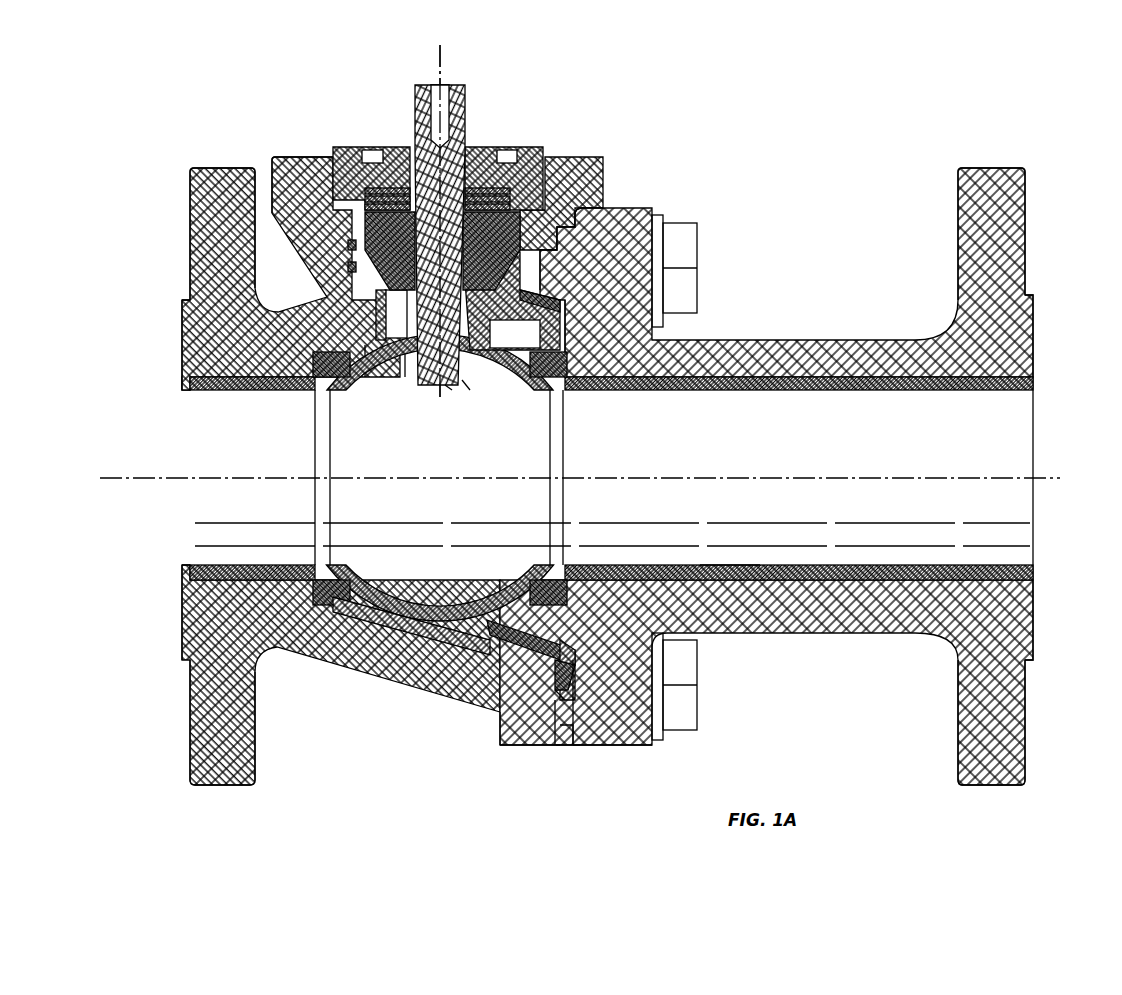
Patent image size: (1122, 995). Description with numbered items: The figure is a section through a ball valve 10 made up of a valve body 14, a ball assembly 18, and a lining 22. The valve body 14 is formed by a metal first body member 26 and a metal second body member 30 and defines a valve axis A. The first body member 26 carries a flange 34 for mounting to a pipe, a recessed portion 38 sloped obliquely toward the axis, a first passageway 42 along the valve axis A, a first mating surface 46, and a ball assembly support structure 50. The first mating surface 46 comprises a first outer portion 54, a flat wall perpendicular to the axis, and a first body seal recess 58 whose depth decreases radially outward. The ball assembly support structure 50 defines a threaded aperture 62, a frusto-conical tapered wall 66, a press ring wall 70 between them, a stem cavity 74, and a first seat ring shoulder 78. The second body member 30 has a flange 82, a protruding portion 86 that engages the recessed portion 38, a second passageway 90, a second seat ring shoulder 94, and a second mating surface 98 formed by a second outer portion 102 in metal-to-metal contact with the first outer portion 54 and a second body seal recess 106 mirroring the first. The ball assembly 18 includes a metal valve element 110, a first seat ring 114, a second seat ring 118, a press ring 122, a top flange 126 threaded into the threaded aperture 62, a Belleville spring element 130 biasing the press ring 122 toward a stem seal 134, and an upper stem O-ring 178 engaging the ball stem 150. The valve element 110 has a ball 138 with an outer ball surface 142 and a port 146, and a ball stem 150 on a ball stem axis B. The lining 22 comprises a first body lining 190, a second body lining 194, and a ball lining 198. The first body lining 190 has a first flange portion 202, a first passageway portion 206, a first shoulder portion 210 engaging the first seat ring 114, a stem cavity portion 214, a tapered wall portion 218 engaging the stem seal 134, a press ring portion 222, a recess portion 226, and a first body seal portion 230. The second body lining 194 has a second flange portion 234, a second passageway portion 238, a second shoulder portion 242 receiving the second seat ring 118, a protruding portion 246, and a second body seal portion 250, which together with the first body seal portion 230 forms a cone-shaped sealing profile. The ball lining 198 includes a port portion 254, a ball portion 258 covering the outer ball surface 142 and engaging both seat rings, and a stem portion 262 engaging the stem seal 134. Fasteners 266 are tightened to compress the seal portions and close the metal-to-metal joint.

The ball valve 10 is at (836, 96).
The valve body 14 is at (880, 180).
The ball assembly 18 is at (478, 100).
The lining 22 is at (376, 442).
The first body member 26 is at (212, 740).
The second body member 30 is at (788, 454).
The flange 34 is at (190, 212).
The recessed portion 38 is at (530, 670).
The first passageway 42 is at (232, 556).
The first mating surface 46 is at (556, 752).
The ball assembly support structure 50 is at (358, 256).
The first outer portion 54 is at (560, 708).
The first body seal recess 58 is at (568, 665).
The threaded aperture 62 is at (346, 146).
The tapered wall 66 is at (366, 278).
The press ring wall 70 is at (322, 183).
The stem cavity 74 is at (370, 295).
The first seat ring shoulder 78 is at (302, 398).
The flange 82 is at (1000, 178).
The protruding portion 86 is at (556, 318).
The second passageway 90 is at (1032, 398).
The second seat ring shoulder 94 is at (580, 395).
The second mating surface 98 is at (582, 752).
The second outer portion 102 is at (545, 740).
The second body seal recess 106 is at (548, 700).
The valve element 110 is at (440, 386).
The first seat ring 114 is at (366, 392).
The second seat ring 118 is at (529, 395).
The press ring 122 is at (546, 170).
The top flange 126 is at (540, 148).
The spring element 130 is at (486, 150).
The stem seal 134 is at (538, 222).
The ball 138 is at (450, 392).
The outer ball surface 142 is at (378, 378).
The port 146 is at (470, 395).
The ball stem 150 is at (423, 90).
The upper stem O-ring 178 is at (400, 162).
The first body lining 190 is at (237, 392).
The second body lining 194 is at (832, 392).
The ball lining 198 is at (433, 562).
The first flange portion 202 is at (183, 332).
The first passageway portion 206 is at (257, 565).
The first shoulder portion 210 is at (340, 578).
The stem cavity portion 214 is at (406, 395).
The tapered wall portion 218 is at (566, 250).
The press ring portion 222 is at (556, 205).
The recess portion 226 is at (450, 672).
The first body seal portion 230 is at (522, 275).
The second flange portion 234 is at (1035, 330).
The second passageway portion 238 is at (750, 562).
The second shoulder portion 242 is at (555, 578).
The protruding portion 246 is at (600, 650).
The second body seal portion 250 is at (520, 300).
The port portion 254 is at (388, 578).
The ball portion 258 is at (505, 578).
The stem portion 262 is at (442, 251).
The fasteners 266 is at (680, 300).
The valve axis A is at (1052, 484).
The ball stem axis B is at (452, 222).